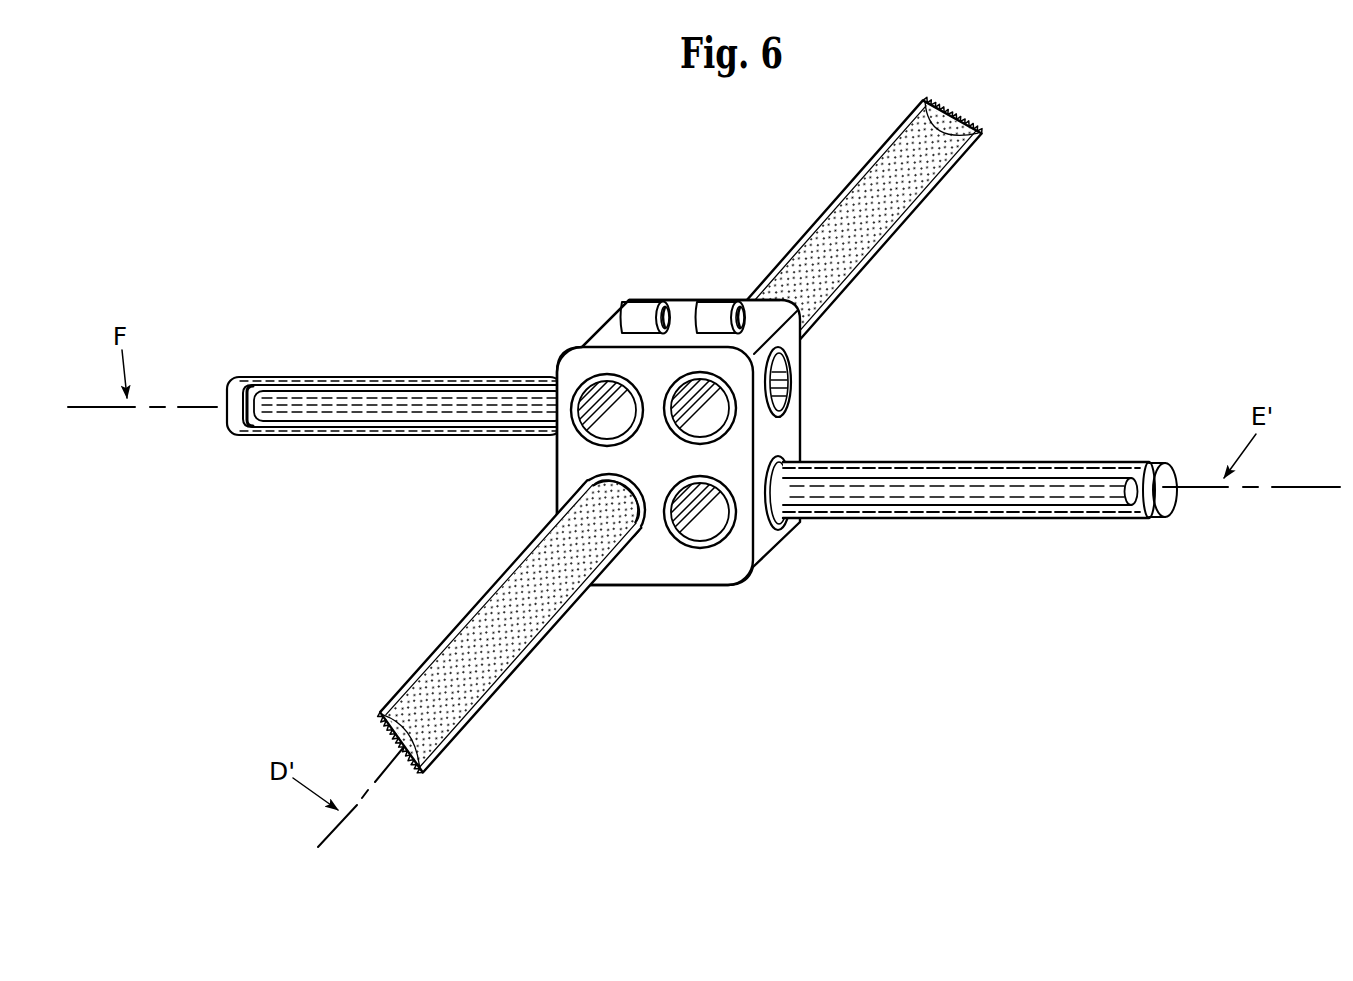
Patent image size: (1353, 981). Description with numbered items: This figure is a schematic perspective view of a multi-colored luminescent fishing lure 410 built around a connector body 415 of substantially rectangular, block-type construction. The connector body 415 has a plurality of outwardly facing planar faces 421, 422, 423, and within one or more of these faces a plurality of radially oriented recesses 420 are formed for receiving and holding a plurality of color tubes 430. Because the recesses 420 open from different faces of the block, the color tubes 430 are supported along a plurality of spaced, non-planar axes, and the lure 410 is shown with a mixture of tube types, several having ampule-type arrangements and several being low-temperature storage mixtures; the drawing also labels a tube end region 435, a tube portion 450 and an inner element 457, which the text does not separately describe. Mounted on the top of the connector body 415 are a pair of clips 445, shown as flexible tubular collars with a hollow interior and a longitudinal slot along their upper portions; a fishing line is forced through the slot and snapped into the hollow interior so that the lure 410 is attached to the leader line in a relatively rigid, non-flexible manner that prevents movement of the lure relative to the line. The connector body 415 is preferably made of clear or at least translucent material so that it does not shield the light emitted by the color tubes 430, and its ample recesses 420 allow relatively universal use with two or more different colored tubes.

The multi-colored luminescent fishing lure 410 is at (543, 281).
The connector body 415 is at (734, 277).
The recesses 420 is at (603, 421).
The outwardly facing planar face 421 is at (595, 338).
The outwardly facing planar face 422 is at (648, 565).
The outwardly facing planar face 423 is at (797, 436).
The color tubes 430 is at (992, 138).
The rod end cap 435 is at (1174, 505).
The clips 445 is at (717, 298).
The half-tube sleeve 450 is at (878, 168).
The inner rod core 457 is at (992, 478).